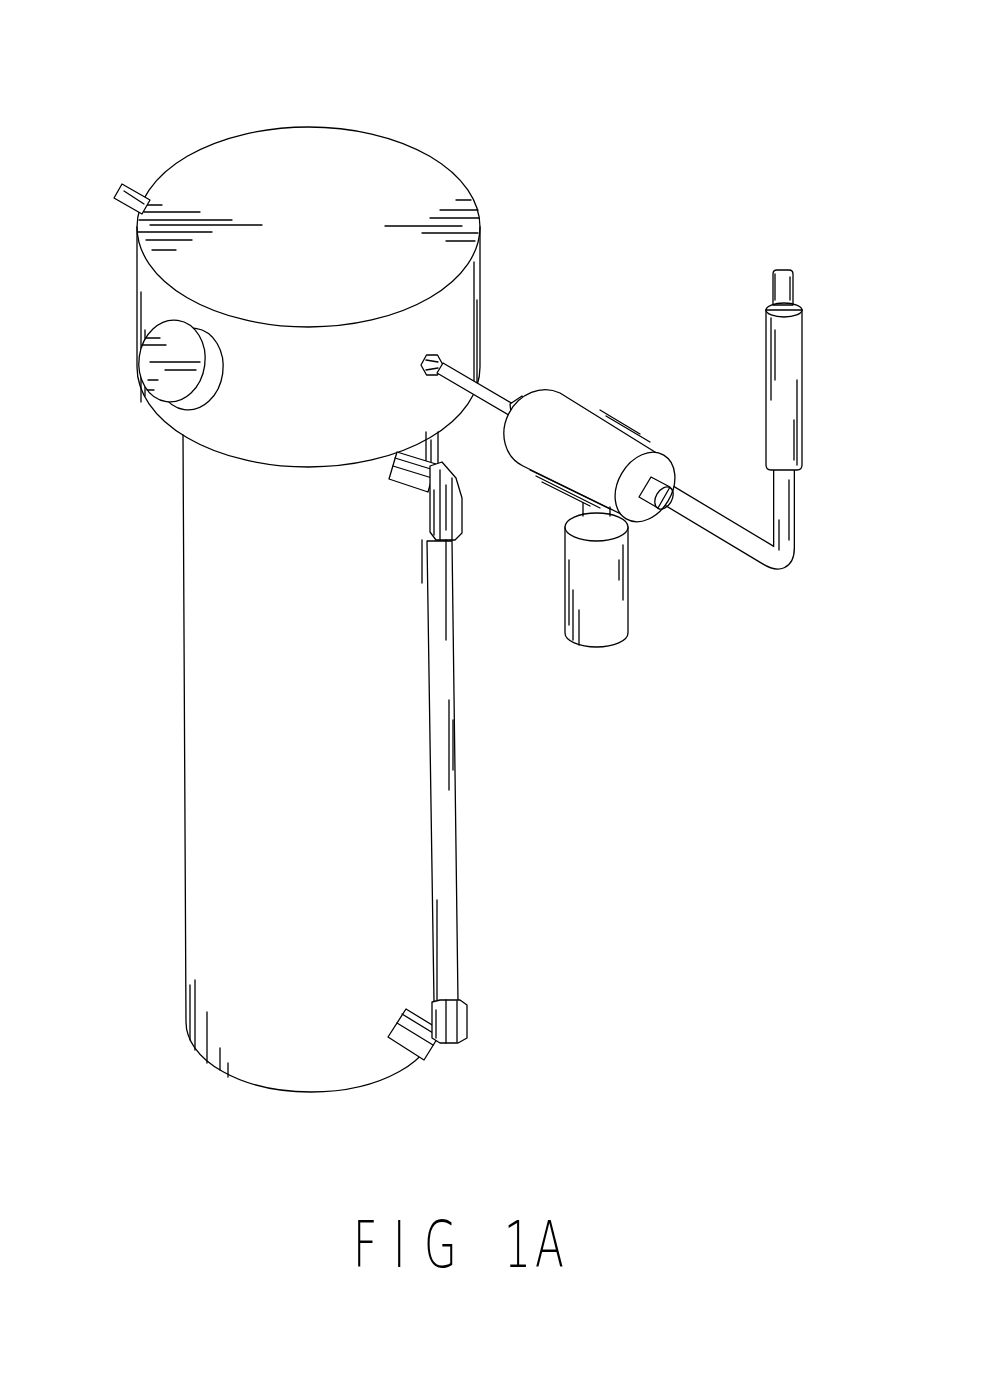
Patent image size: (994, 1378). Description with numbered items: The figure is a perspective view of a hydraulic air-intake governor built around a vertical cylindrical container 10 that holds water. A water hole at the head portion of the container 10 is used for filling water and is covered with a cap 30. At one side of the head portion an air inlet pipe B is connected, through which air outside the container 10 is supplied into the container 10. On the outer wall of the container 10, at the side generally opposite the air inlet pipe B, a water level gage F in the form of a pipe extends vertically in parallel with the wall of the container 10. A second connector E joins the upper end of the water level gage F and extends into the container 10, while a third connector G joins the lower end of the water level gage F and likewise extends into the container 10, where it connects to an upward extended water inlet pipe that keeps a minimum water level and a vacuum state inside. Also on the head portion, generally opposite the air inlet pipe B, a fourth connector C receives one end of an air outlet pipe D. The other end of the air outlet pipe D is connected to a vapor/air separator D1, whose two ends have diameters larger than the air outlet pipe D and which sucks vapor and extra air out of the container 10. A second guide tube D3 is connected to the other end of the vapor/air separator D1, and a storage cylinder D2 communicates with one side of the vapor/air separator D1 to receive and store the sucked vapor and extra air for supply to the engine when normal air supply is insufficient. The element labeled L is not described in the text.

The vertical cylindrical container 10 is at (333, 112).
The air inlet pipe B is at (118, 192).
The cap 30 is at (172, 379).
The fourth connector C is at (443, 360).
The air outlet pipe D is at (487, 380).
The vapor/air separator D1 is at (602, 420).
The storage cylinder D2 is at (612, 623).
The second guide tube D3 is at (746, 540).
The second connector E is at (463, 524).
The water level gage F is at (459, 798).
The third connector G is at (468, 1035).
The vertical tube L is at (802, 383).